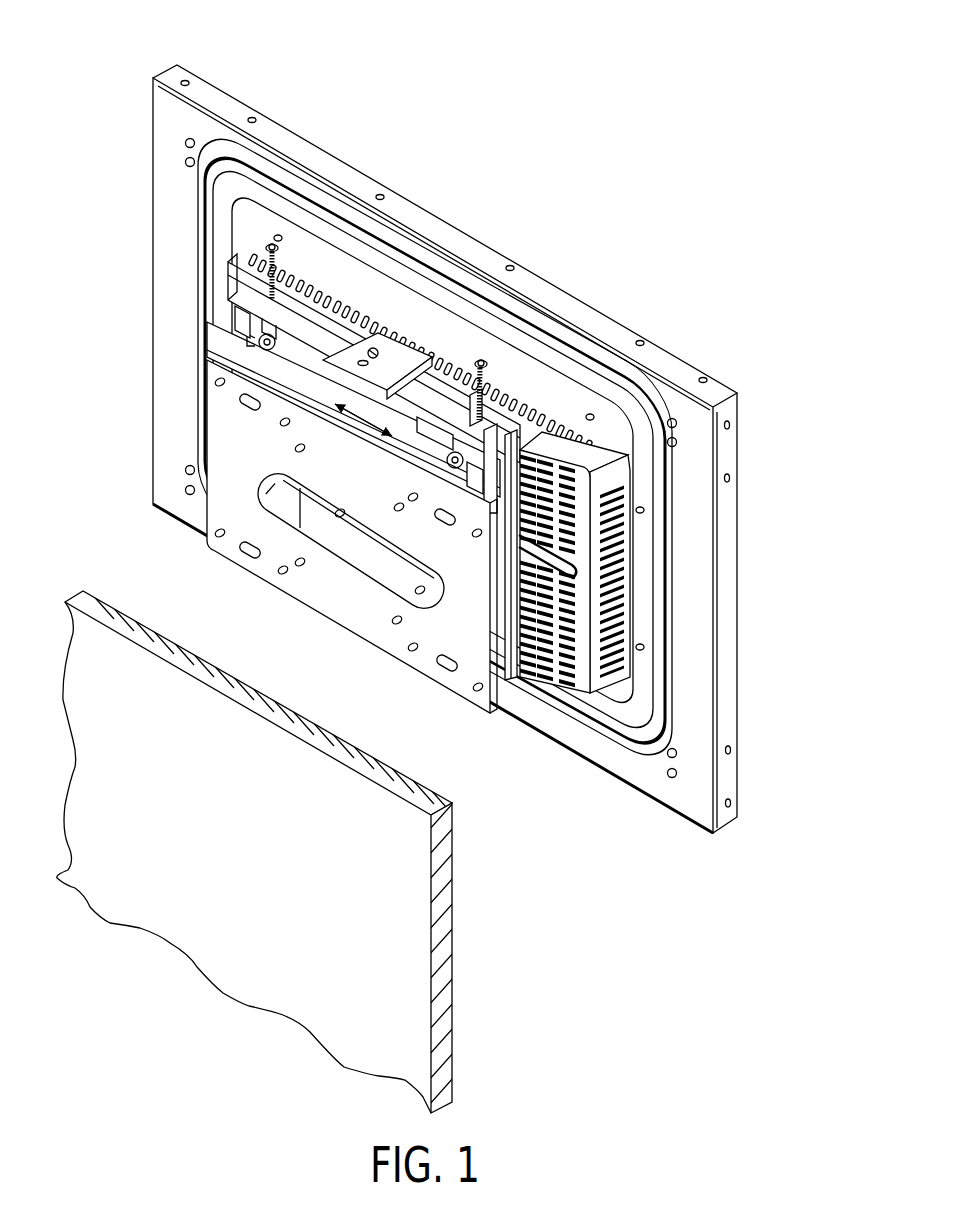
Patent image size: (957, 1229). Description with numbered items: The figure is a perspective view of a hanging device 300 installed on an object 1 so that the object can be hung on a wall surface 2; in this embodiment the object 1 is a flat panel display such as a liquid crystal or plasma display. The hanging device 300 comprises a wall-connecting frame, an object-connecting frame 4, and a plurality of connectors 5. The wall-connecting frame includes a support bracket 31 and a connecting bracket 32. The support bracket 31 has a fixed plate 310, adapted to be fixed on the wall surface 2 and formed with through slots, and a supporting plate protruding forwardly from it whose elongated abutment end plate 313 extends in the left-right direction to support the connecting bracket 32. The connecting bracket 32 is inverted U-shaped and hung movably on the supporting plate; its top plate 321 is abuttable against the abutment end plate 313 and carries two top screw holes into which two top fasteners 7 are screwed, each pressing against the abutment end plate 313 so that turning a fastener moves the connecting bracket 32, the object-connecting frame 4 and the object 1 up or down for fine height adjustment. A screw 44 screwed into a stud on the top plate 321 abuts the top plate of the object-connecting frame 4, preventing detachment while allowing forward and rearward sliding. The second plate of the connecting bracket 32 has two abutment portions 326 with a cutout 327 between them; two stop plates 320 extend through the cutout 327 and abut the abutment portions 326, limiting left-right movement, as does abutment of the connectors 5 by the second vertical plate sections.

The object 1 is at (600, 318).
The wall surface 2 is at (386, 912).
The object-connecting frame 4 is at (510, 686).
The connector 5 is at (575, 488).
The top fastener 7 is at (271, 240).
The support bracket 31 is at (352, 565).
The connecting bracket 32 is at (449, 388).
The screw 44 is at (378, 335).
The hanging device 300 is at (337, 375).
The fixed plate 310 is at (428, 658).
The abutment end plate 313 is at (562, 430).
The stop plate 320 is at (310, 372).
The top plate 321 is at (310, 325).
The abutment portion 326 is at (262, 323).
The cutout 327 is at (284, 345).